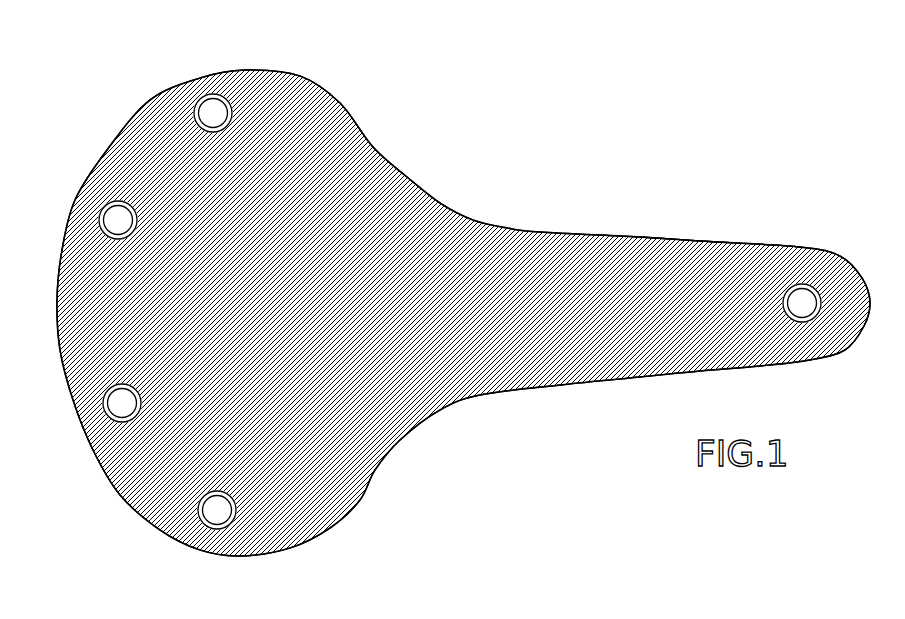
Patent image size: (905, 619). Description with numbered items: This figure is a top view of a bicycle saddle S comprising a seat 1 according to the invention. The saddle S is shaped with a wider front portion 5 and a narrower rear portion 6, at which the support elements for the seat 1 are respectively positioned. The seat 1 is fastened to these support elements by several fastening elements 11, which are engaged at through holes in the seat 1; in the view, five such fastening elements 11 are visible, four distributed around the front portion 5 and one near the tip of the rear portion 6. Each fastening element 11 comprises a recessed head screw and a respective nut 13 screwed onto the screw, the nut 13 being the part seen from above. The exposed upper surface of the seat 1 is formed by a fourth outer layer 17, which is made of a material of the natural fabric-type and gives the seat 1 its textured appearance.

The seat 1 is at (525, 232).
The bicycle saddle S is at (660, 216).
The front portion 5 is at (675, 343).
The rear portion 6 is at (63, 360).
The fastening elements 11 is at (200, 76).
The nut 13 is at (217, 110).
The fourth outer layer 17 is at (437, 233).